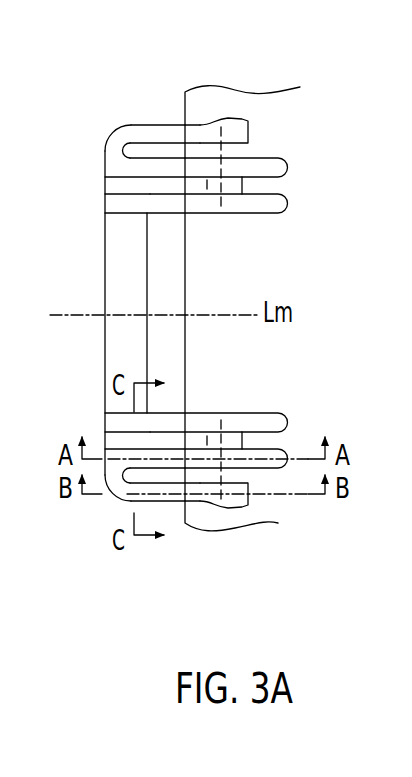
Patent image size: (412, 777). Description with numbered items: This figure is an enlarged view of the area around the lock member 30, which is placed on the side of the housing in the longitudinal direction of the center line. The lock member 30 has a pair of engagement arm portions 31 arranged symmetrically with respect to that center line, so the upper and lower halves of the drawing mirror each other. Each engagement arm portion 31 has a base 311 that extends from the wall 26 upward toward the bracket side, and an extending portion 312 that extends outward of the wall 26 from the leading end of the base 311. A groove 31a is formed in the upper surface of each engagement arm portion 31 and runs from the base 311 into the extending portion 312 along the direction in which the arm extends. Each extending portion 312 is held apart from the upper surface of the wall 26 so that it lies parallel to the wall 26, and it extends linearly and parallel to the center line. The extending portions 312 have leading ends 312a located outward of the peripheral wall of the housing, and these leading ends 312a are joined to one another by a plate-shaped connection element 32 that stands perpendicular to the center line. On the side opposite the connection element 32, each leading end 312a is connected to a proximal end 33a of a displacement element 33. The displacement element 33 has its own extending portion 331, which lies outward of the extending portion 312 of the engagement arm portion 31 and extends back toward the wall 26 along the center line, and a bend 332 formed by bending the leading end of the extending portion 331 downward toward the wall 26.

The lock member 30 is at (108, 118).
The wall 26 is at (270, 107).
The engagement arm portion 31 is at (300, 218).
The base 311 is at (227, 205).
The extending portion 312 is at (165, 207).
The leading end 312a is at (117, 203).
The groove 31a is at (236, 187).
The connection element 32 is at (123, 270).
The displacement element 33 is at (263, 50).
The extending portion 331 is at (173, 137).
The bend 332 is at (237, 128).
The proximal end 33a is at (110, 152).